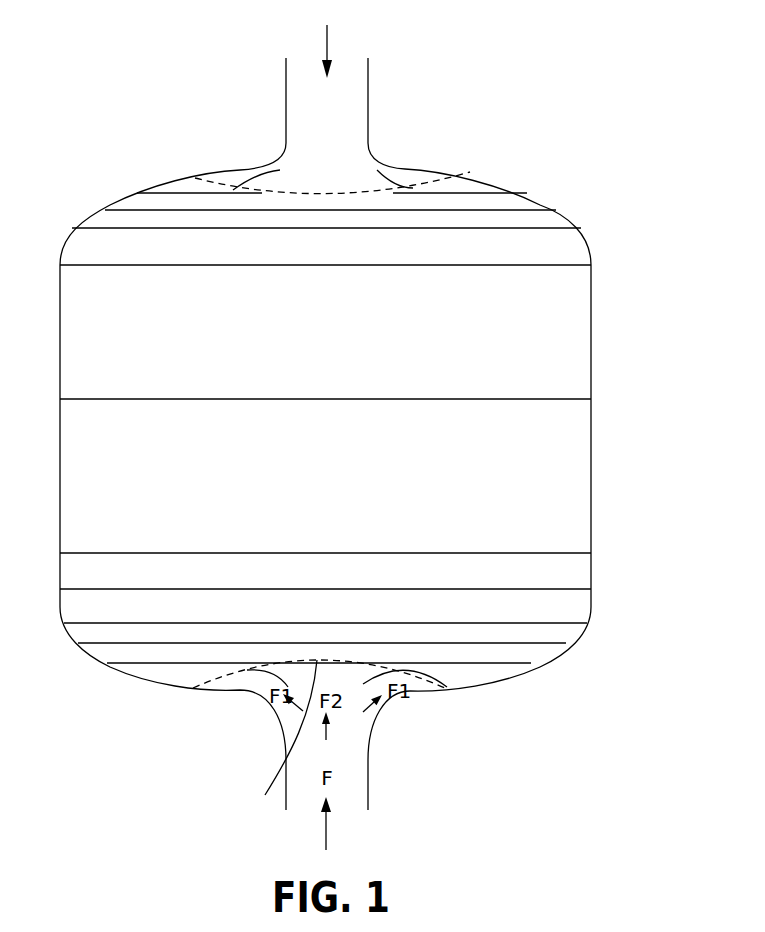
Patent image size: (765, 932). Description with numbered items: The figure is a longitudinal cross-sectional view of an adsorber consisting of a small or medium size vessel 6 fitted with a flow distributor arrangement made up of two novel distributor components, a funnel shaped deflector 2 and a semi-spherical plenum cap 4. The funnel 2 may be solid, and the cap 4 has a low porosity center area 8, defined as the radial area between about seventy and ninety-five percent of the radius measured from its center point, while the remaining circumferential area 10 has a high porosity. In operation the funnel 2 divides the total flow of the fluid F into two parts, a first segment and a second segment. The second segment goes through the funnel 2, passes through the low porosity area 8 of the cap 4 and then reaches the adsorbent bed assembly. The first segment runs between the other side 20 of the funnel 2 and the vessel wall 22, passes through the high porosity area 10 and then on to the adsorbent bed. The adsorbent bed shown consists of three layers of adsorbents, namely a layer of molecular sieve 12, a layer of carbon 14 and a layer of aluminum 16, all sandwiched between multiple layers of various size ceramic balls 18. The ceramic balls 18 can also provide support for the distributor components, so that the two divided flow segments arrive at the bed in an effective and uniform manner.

The funnel shaped deflector 2 is at (383, 176).
The semi-spherical plenum cap 4 is at (285, 741).
The vessel 6 is at (610, 255).
The low porosity center area 8 is at (322, 195).
The high porosity circumferential area 10 is at (443, 694).
The layer of molecular sieve 12 is at (576, 339).
The layer of carbon 14 is at (577, 491).
The layer of aluminum 16 is at (573, 577).
The ceramic balls 18 is at (505, 248).
The other side of funnel 20 is at (250, 675).
The vessel wall 22 is at (271, 712).